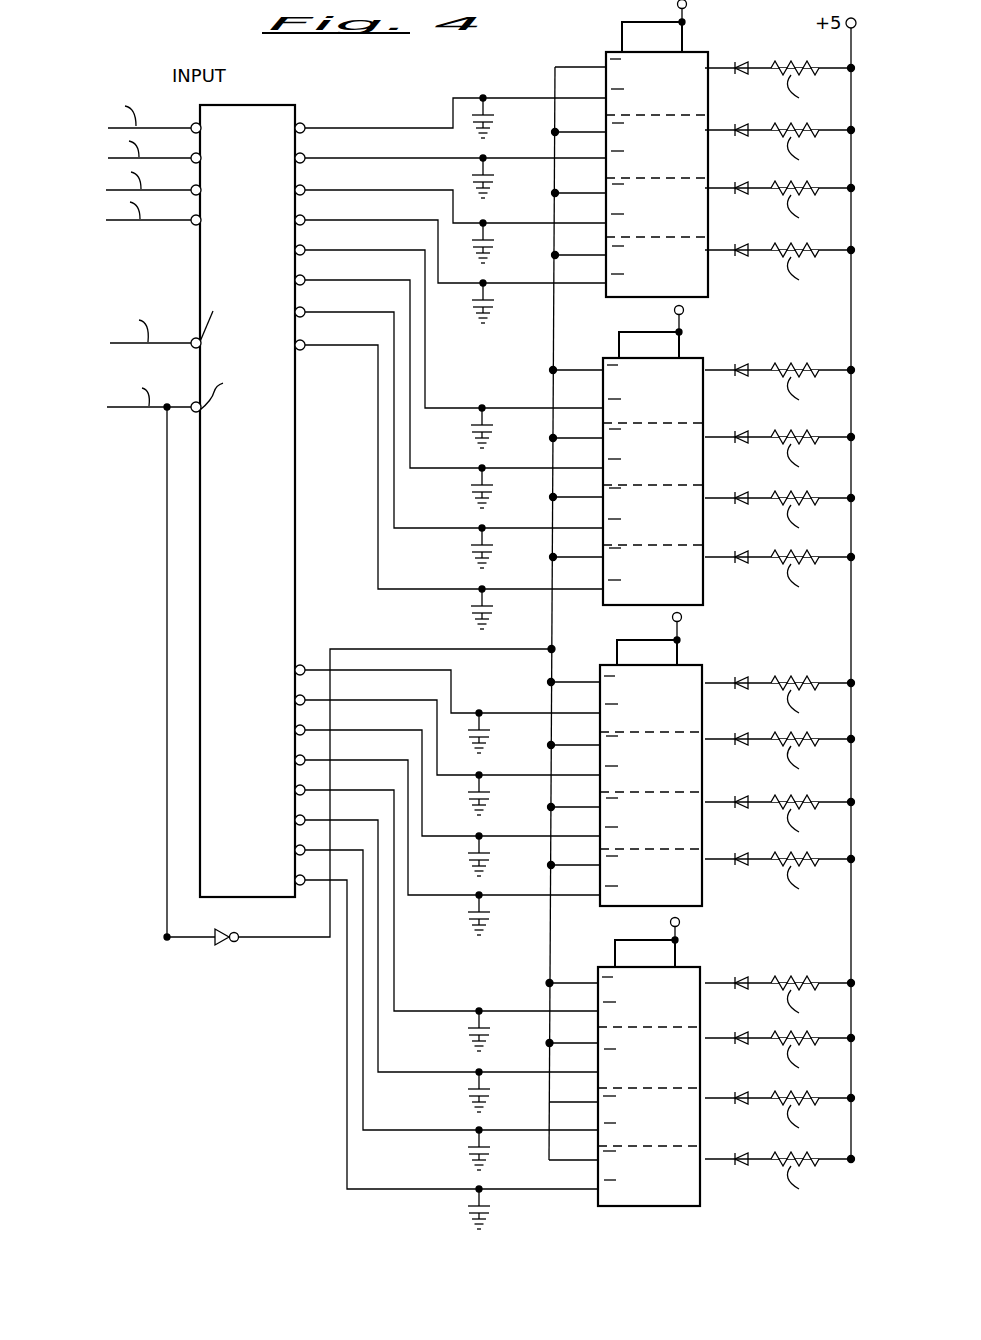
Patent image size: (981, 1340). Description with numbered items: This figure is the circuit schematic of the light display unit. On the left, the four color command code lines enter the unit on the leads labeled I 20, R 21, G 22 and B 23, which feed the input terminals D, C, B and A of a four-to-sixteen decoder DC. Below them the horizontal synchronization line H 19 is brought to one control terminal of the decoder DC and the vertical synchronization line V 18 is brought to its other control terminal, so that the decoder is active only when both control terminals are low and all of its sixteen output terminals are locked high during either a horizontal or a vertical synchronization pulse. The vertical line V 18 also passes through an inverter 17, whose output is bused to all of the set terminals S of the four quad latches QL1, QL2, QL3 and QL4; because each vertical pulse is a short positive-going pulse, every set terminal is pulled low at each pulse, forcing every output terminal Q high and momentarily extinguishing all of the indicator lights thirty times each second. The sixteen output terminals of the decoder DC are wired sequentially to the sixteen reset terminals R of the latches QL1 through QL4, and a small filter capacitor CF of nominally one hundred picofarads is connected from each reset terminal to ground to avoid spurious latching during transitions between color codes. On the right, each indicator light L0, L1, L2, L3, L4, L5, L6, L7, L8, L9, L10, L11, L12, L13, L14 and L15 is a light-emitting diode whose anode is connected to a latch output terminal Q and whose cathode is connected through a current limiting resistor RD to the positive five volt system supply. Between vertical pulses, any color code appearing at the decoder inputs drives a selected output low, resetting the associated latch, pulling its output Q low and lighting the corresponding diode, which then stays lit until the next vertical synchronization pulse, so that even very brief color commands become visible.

The inverter 17 is at (222, 947).
The vertical sync input V 18 is at (154, 395).
The horizontal sync input H 19 is at (155, 327).
The intensity input I 20 is at (154, 116).
The red input R 21 is at (154, 148).
The green input G 22 is at (153, 180).
The blue input B 23 is at (153, 210).
The four-to-sixteen decoder DC is at (296, 532).
The quad latch QL1 is at (630, 300).
The quad latch QL2 is at (626, 607).
The quad latch QL3 is at (626, 910).
The quad latch QL4 is at (626, 1207).
The filter capacitor CF is at (467, 1214).
The current limiting resistor RD is at (816, 640).
The indicator light L0 is at (780, 1174).
The indicator light L1 is at (780, 1113).
The indicator light L2 is at (780, 1053).
The indicator light L3 is at (780, 998).
The indicator light L4 is at (780, 874).
The indicator light L5 is at (780, 817).
The indicator light L6 is at (780, 754).
The indicator light L7 is at (780, 698).
The indicator light L8 is at (780, 572).
The indicator light L9 is at (780, 513).
The indicator light L10 is at (780, 452).
The indicator light L11 is at (780, 385).
The indicator light L12 is at (780, 265).
The indicator light L13 is at (780, 203).
The indicator light L14 is at (780, 145).
The indicator light L15 is at (780, 83).